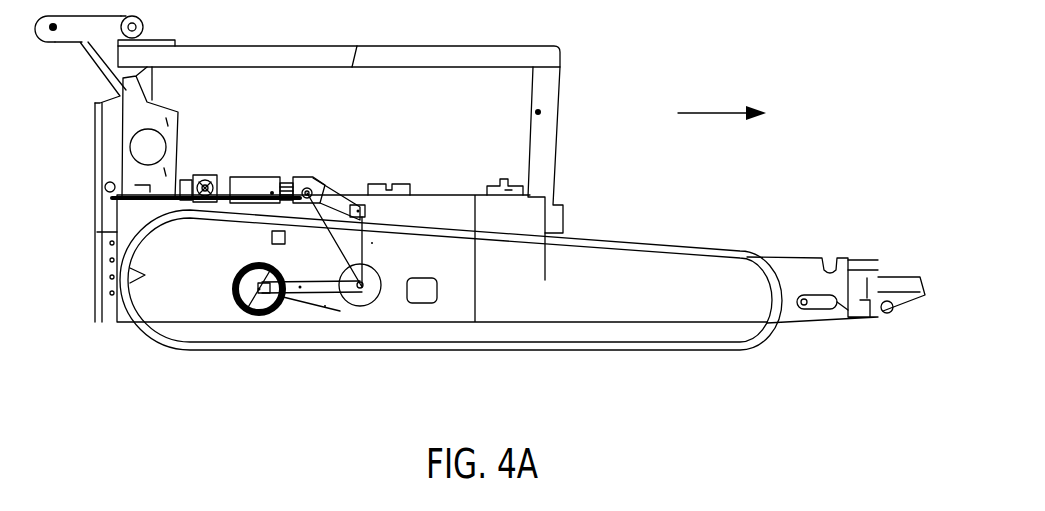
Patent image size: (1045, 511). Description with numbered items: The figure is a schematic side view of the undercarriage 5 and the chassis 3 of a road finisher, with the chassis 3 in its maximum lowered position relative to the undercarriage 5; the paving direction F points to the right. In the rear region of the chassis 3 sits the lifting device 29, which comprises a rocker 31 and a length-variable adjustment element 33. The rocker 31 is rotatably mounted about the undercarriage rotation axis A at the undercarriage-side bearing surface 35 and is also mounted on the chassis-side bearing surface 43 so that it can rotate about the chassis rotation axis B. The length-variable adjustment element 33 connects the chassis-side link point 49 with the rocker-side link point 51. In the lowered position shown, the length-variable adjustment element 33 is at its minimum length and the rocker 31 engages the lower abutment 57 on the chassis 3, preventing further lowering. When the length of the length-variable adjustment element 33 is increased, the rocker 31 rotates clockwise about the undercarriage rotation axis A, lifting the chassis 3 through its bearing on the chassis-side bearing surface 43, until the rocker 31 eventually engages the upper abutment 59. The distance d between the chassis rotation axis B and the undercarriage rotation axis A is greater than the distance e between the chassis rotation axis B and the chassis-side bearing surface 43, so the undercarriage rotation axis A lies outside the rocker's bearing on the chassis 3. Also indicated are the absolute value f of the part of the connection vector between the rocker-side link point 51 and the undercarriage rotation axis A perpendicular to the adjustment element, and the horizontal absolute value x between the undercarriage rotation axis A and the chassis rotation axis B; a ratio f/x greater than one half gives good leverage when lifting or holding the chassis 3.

The chassis 3 is at (604, 61).
The undercarriage 5 is at (561, 360).
The lifting device 29 is at (338, 148).
The rocker 31 is at (300, 304).
The length-variable adjustment element 33 is at (258, 175).
The undercarriage-side bearing surface 35 is at (388, 273).
The chassis-side bearing surface 43 is at (283, 270).
The chassis-side link point 49 is at (205, 175).
The rocker-side link point 51 is at (303, 180).
The lower abutment 57 is at (272, 240).
The upper abutment 59 is at (370, 185).
The undercarriage rotation axis A is at (378, 333).
The chassis rotation axis B is at (263, 318).
The distance between chassis rotation axis and undercarriage rotation axis d is at (325, 306).
The distance between chassis rotation axis and chassis-side bearing surface e is at (242, 292).
The absolute value of perpendicular connection vector part f is at (372, 243).
The absolute value of horizontal connection vector part x is at (300, 280).
The paving direction F is at (722, 101).